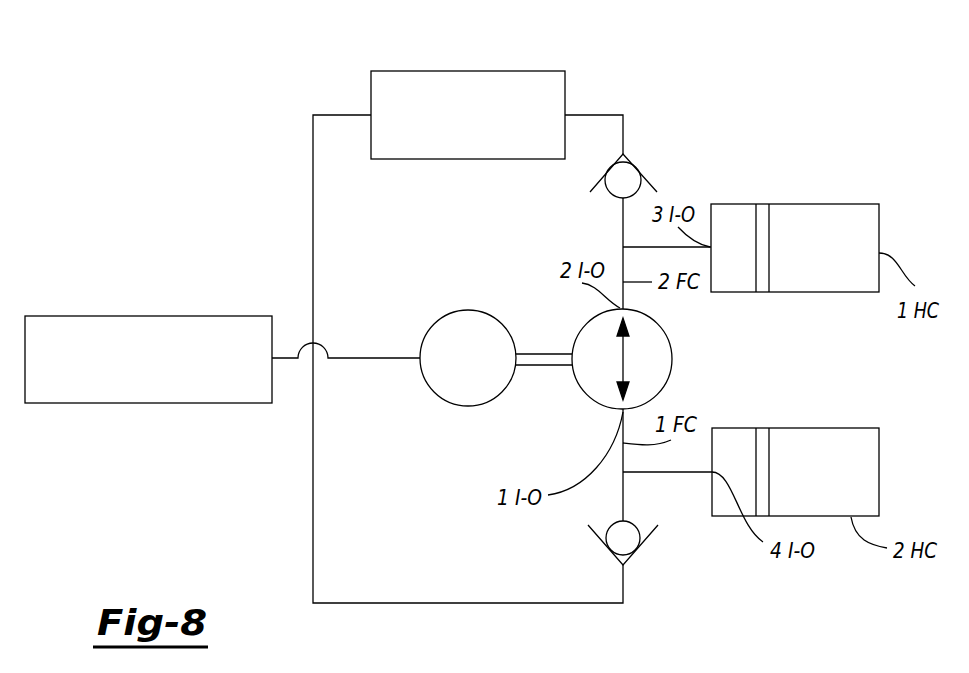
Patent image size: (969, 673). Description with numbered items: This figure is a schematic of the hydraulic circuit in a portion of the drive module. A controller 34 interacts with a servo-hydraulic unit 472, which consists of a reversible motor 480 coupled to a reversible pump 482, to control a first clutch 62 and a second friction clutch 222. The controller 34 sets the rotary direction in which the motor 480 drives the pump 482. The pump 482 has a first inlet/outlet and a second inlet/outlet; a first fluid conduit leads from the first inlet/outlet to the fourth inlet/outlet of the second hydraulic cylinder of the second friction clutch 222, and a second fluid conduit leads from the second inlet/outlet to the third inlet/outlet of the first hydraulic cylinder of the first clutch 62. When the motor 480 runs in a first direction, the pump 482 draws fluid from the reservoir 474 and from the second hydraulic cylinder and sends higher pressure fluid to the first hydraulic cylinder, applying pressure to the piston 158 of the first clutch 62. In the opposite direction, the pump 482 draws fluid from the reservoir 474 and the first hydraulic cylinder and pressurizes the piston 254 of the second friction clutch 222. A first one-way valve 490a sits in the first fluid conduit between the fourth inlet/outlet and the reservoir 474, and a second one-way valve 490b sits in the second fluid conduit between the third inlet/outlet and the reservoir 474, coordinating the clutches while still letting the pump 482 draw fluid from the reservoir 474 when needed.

The controller 34 is at (152, 316).
The reservoir 474 is at (427, 71).
The servo-hydraulic unit 472 is at (587, 359).
The reversible motor 480 is at (468, 310).
The reversible pump 482 is at (662, 358).
The first one-way valve 490a is at (620, 537).
The second one-way valve 490b is at (622, 183).
The first clutch 62 is at (795, 200).
The piston 158 is at (770, 218).
The second friction clutch 222 is at (795, 425).
The piston 254 is at (770, 444).